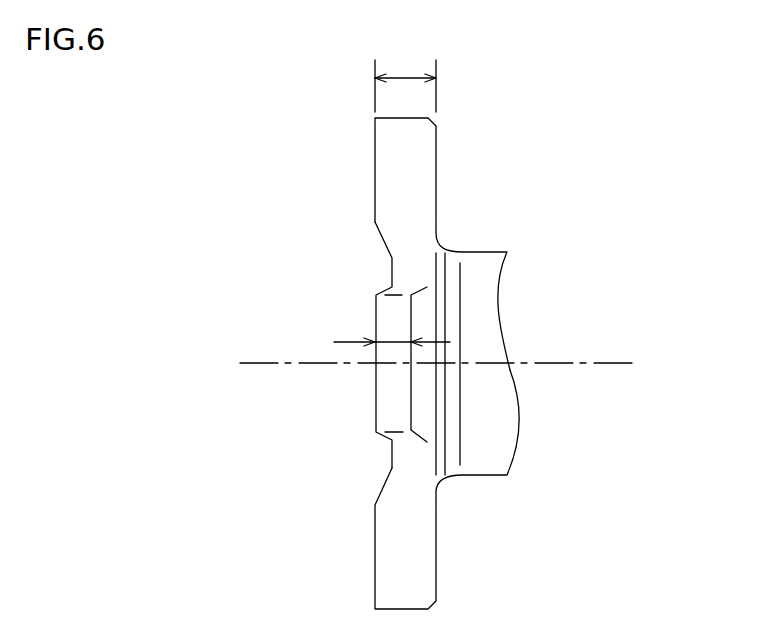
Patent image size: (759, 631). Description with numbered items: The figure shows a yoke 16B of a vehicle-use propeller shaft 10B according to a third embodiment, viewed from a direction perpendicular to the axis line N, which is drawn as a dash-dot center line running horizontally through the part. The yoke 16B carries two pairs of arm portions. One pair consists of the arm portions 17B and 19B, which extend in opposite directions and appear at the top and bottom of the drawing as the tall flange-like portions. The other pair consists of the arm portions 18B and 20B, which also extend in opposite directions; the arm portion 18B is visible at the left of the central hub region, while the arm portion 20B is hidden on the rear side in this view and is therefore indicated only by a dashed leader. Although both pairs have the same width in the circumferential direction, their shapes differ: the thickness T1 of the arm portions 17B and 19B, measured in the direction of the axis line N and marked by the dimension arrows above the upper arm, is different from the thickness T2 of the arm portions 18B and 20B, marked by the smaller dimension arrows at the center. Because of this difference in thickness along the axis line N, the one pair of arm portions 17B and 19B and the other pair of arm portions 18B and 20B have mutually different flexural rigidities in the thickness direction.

The propeller shaft 10B is at (492, 363).
The yoke 16B is at (492, 363).
The arm portion 17B is at (418, 176).
The arm portion 18B is at (387, 403).
The arm portion 19B is at (410, 580).
The arm portion 20B is at (387, 317).
The axis line N is at (612, 363).
The thickness T1 is at (405, 69).
The thickness T2 is at (375, 340).